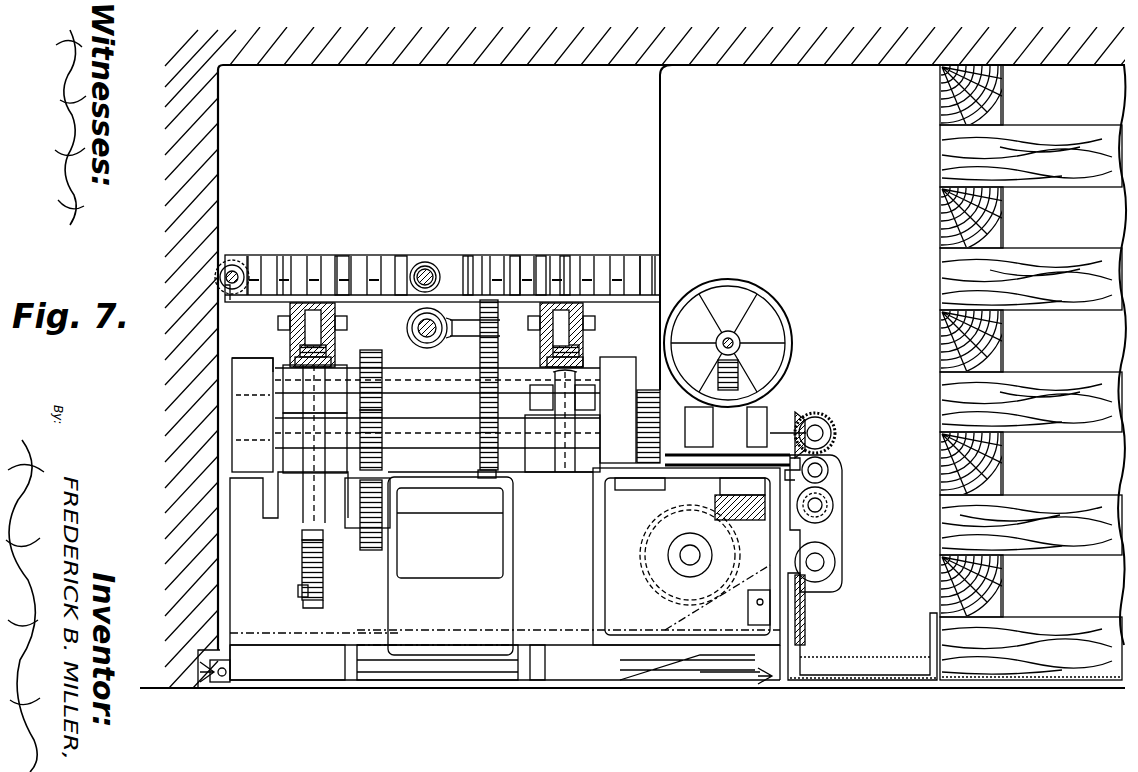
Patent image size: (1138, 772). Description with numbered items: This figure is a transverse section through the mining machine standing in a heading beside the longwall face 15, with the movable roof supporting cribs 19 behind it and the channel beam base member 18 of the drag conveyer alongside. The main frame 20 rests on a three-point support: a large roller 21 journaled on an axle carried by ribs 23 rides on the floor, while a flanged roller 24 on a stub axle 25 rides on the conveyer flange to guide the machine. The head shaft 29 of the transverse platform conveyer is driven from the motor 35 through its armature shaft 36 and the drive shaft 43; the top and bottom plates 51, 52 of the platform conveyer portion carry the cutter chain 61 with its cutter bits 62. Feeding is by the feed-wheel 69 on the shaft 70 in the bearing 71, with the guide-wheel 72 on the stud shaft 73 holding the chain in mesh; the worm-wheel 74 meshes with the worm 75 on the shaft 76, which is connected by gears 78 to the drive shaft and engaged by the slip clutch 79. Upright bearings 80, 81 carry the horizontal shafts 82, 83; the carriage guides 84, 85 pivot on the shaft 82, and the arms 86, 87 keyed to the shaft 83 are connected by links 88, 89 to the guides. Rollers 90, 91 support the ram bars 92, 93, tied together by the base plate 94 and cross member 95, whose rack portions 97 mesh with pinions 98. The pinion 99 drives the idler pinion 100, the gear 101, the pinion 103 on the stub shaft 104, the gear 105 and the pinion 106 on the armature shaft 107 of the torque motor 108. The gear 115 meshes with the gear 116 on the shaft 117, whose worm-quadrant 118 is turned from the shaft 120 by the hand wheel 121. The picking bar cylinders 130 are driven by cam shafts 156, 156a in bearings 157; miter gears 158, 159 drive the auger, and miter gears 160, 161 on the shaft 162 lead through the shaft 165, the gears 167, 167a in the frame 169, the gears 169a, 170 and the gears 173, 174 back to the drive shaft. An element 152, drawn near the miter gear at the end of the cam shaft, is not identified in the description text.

The longwall face 15 is at (641, 134).
The channel beam base member 18 is at (930, 642).
The movable roof supporting crib 19 is at (960, 208).
The main frame 20 is at (582, 648).
The large roller 21 is at (436, 682).
The ribs 23 is at (538, 668).
The flanged or grooved roller 24 is at (805, 605).
The stub axle 25 is at (748, 615).
The head shaft 29 is at (822, 566).
The motor 35 is at (668, 560).
The armature shaft 36 is at (688, 557).
The drive shaft 43 is at (824, 433).
The top plate 51 is at (700, 668).
The bottom plate 52 is at (742, 678).
The cutter chain 61 is at (228, 678).
The cutter bit 62 is at (766, 684).
The feed-wheel 69 is at (830, 482).
The shaft 70 is at (752, 522).
The bearing 71 is at (739, 490).
The guide-wheel 72 is at (665, 506).
The stud shaft or pin 73 is at (648, 524).
The worm-wheel 74 is at (690, 545).
The worm 75 is at (826, 514).
The shaft 76 is at (823, 504).
The gears 78 is at (829, 468).
The slip clutch 79 is at (832, 548).
The upright supporting bracket or bearing 80 is at (624, 370).
The upright supporting bracket or bearing 81 is at (250, 408).
The horizontal shaft 82 is at (437, 380).
The horizontal shaft 83 is at (437, 433).
The carriage guide member 84 is at (538, 262).
The carriage guide member 85 is at (240, 368).
The arm 86 is at (556, 475).
The arm 87 is at (319, 470).
The link 88 is at (570, 475).
The link 89 is at (300, 432).
The roller 90 is at (596, 322).
The roller 91 is at (338, 322).
The ram bar 92 is at (586, 309).
The ram bar 93 is at (225, 290).
The base plate 94 is at (661, 270).
The cross member 95 is at (642, 258).
The rack portion 97 is at (582, 350).
The pinion 98 is at (584, 366).
The pinion 99 is at (370, 370).
The idler pinion 100 is at (376, 428).
The gear 101 is at (392, 498).
The pinion 103 is at (382, 552).
The stub shaft 104 is at (300, 535).
The gear 105 is at (302, 548).
The pinion 106 is at (315, 606).
The armature shaft 107 is at (298, 590).
The torque motor 108 is at (568, 566).
The gear 115 is at (645, 488).
The gear 116 is at (637, 418).
The shaft 117 is at (700, 440).
The worm-quadrant 118 is at (740, 380).
The shaft 120 is at (745, 330).
The hand wheel 121 is at (738, 284).
The cylinder 130 is at (563, 262).
The wheel 152 is at (220, 278).
The cam shaft 156 is at (612, 258).
The cam shaft 156a is at (336, 258).
The bearing 157 is at (656, 262).
The miter gear 158 is at (248, 262).
The miter gear 159 is at (222, 272).
The miter gear 160 is at (440, 264).
The miter gear 161 is at (428, 264).
The shaft 162 is at (398, 262).
The shaft 165 is at (408, 328).
The gear 167 is at (466, 262).
The gear 167a is at (505, 262).
The frame 169 is at (460, 370).
The gear 169a is at (480, 424).
The gear 170 is at (486, 480).
The gear 173 is at (803, 420).
The gear 174 is at (832, 425).